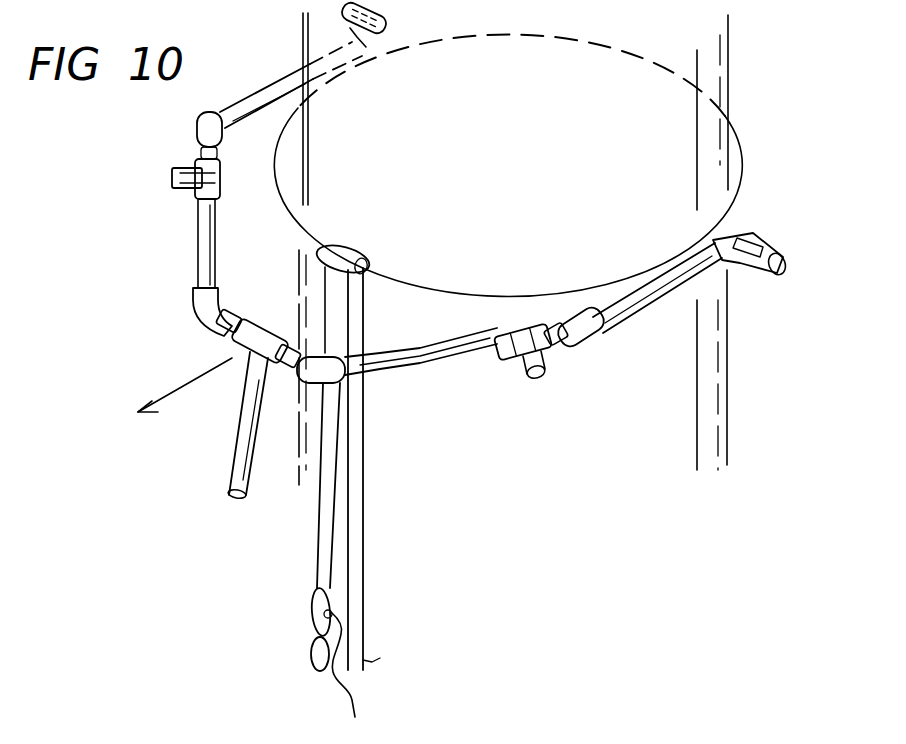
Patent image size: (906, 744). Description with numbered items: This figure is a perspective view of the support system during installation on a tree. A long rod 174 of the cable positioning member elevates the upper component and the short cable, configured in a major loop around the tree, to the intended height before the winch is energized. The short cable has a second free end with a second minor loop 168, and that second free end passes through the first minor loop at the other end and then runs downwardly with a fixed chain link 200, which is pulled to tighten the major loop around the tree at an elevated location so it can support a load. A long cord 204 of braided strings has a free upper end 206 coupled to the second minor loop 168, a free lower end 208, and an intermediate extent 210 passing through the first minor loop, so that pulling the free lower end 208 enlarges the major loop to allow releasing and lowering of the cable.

The second minor loop 168 is at (313, 603).
The long rod 174 is at (233, 440).
The fixed chain link 200 is at (310, 660).
The long cord 204 is at (365, 522).
The free upper end 206 is at (365, 678).
The free lower end 208 is at (348, 670).
The intermediate extent 210 is at (414, 217).